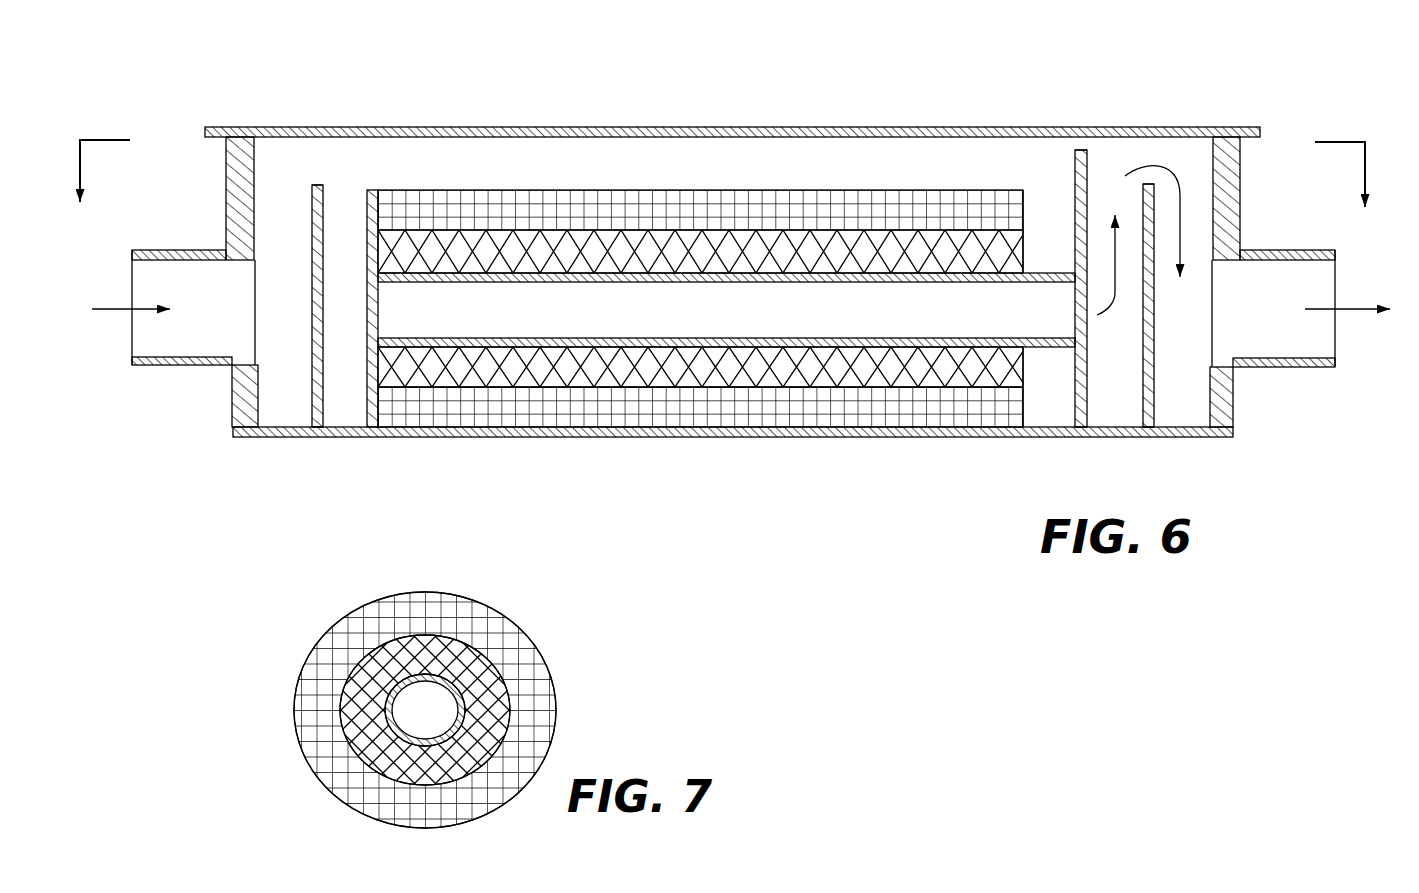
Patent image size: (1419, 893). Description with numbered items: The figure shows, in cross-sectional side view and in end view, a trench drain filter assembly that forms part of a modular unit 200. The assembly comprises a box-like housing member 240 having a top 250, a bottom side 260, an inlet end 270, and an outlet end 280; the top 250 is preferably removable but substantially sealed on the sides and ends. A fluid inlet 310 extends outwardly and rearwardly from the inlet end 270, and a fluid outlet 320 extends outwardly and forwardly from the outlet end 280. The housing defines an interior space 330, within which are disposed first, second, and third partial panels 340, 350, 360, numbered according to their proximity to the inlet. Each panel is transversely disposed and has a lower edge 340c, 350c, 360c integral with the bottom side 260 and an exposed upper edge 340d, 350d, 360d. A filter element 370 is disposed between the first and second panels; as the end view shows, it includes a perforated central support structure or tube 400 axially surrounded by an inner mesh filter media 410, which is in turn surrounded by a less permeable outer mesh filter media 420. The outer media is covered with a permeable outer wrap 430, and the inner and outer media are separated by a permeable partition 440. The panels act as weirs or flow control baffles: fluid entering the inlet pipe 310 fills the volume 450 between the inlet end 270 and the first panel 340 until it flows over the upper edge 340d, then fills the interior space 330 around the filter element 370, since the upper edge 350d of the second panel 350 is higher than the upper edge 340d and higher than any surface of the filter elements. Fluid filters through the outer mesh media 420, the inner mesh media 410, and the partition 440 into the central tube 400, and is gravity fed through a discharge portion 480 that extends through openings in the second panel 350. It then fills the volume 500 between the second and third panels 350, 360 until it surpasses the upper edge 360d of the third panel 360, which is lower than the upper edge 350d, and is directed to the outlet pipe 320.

In FIG. 6, the modular unit 200 is at (732, 249).
In FIG. 6, the housing member 240 is at (732, 273).
In FIG. 6, the top 250 is at (420, 127).
In FIG. 6, the bottom side 260 is at (740, 438).
In FIG. 6, the inlet end 270 is at (228, 398).
In FIG. 6, the outlet end 280 is at (1235, 405).
In FIG. 6, the fluid inlet 310 is at (160, 368).
In FIG. 6, the fluid outlet 320 is at (1303, 370).
In FIG. 6, the interior space 330 is at (830, 167).
In FIG. 6, the first partial panel 340 is at (312, 400).
In FIG. 6, the lower edge of first panel 340c is at (318, 440).
In FIG. 6, the upper edge of first panel 340d is at (318, 185).
In FIG. 6, the second partial panel 350 is at (1075, 396).
In FIG. 6, the lower edge of second panel 350c is at (1080, 437).
In FIG. 6, the upper edge of second panel 350d is at (1080, 150).
In FIG. 6, the third partial panel 360 is at (1145, 402).
In FIG. 6, the lower edge of third panel 360c is at (1148, 437).
In FIG. 6, the upper edge of third panel 360d is at (1148, 184).
In FIG. 6, the filter element 370 is at (721, 190).
In FIG. 6, the volume between inlet end and first panel 450 is at (284, 260).
In FIG. 6, the discharge portion 480 is at (1050, 222).
In FIG. 6, the volume between second and third panels 500 is at (1112, 183).
In FIG. 7, the perforated central support structure 400 is at (411, 687).
In FIG. 7, the inner mesh filter media 410 is at (462, 700).
In FIG. 7, the outer mesh filter media 420 is at (435, 608).
In FIG. 7, the permeable outer wrap 430 is at (298, 710).
In FIG. 7, the permeable partition 440 is at (348, 752).